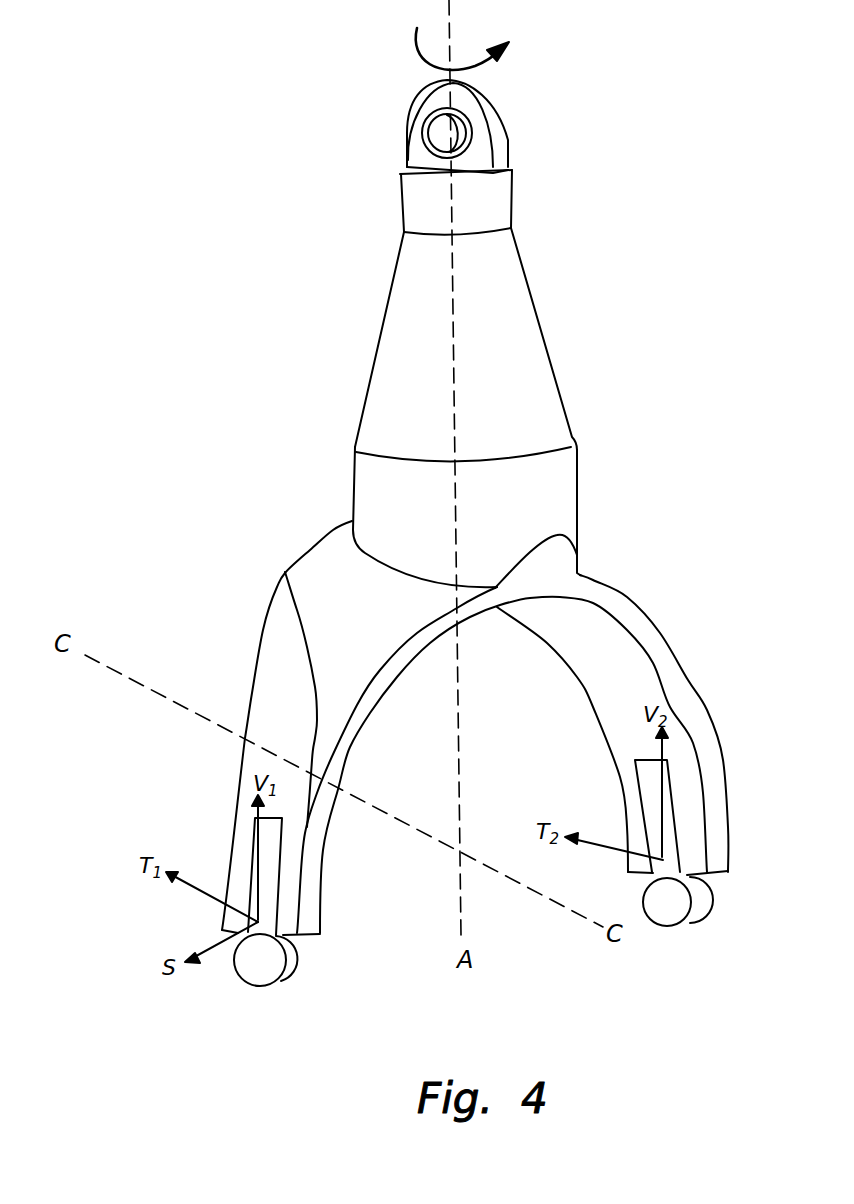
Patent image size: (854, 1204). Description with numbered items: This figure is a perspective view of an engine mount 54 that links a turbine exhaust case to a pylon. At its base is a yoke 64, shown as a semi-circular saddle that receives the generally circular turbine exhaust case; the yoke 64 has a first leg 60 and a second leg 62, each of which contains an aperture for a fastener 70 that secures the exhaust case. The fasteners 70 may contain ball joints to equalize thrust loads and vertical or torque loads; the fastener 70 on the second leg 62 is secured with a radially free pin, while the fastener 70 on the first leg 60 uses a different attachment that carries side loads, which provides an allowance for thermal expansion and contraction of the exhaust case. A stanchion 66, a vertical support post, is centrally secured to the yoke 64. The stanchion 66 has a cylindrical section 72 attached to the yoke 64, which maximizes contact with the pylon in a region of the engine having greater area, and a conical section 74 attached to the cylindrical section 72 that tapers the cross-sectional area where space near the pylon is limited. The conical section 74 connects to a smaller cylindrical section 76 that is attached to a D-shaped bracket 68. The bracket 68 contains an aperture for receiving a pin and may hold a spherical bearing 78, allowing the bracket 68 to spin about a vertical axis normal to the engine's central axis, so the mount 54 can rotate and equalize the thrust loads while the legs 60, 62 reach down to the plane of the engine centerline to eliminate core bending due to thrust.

The mount 54 is at (244, 224).
The first leg 60 is at (240, 767).
The second leg 62 is at (663, 632).
The yoke 64 is at (285, 572).
The stanchion 66 is at (547, 333).
The bracket 68 is at (497, 107).
The fastener 70 is at (250, 970).
The cylindrical section 72 is at (578, 492).
The conical section 74 is at (383, 322).
The smaller cylindrical section 76 is at (513, 196).
The spherical bearing 78 is at (421, 130).